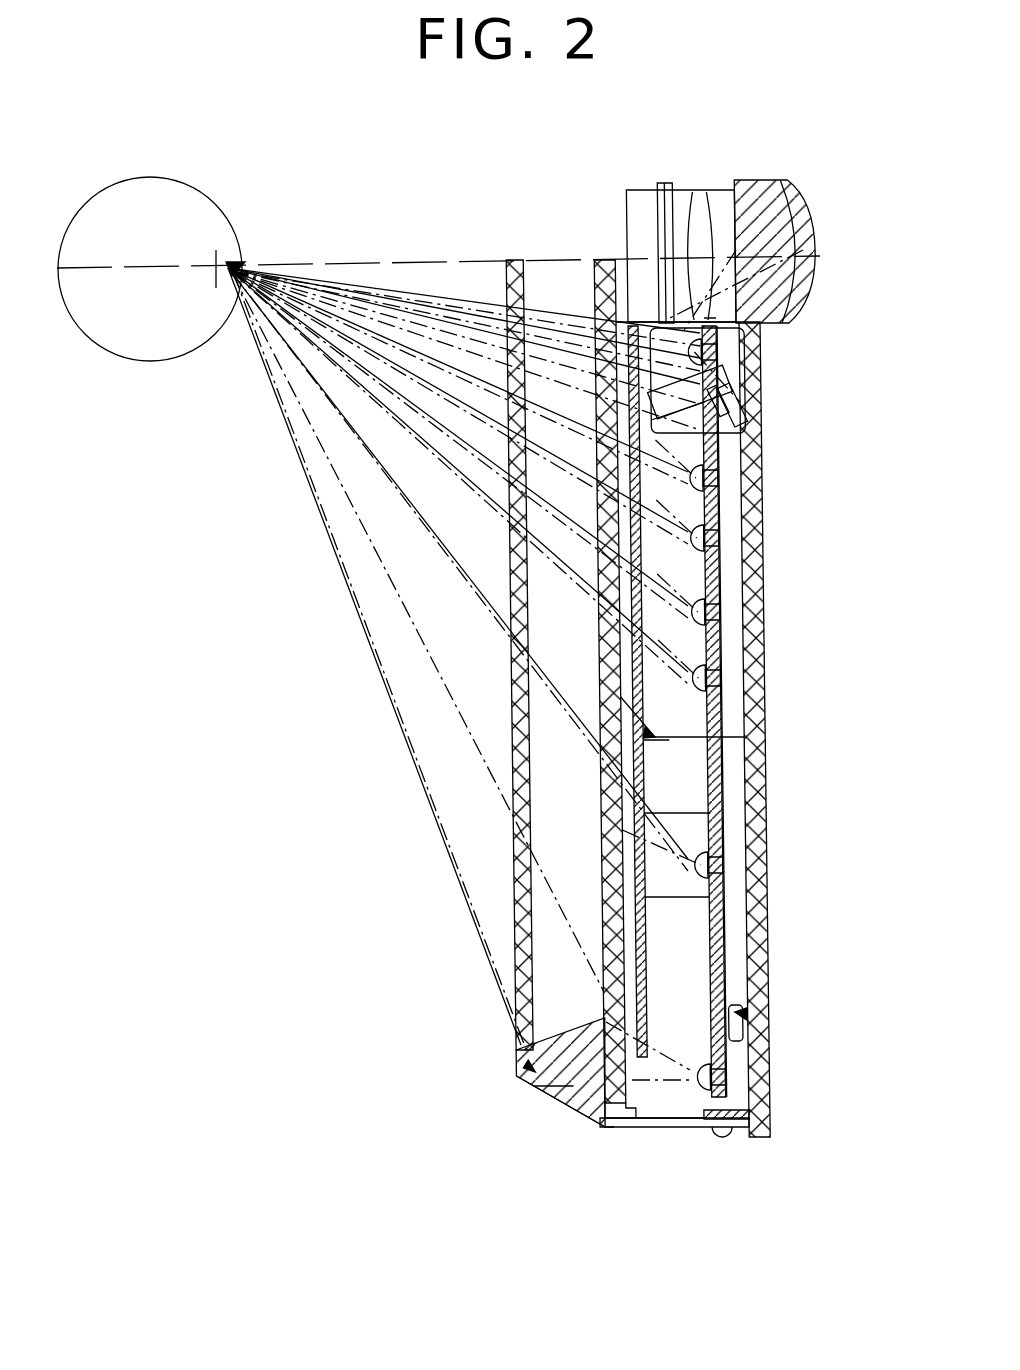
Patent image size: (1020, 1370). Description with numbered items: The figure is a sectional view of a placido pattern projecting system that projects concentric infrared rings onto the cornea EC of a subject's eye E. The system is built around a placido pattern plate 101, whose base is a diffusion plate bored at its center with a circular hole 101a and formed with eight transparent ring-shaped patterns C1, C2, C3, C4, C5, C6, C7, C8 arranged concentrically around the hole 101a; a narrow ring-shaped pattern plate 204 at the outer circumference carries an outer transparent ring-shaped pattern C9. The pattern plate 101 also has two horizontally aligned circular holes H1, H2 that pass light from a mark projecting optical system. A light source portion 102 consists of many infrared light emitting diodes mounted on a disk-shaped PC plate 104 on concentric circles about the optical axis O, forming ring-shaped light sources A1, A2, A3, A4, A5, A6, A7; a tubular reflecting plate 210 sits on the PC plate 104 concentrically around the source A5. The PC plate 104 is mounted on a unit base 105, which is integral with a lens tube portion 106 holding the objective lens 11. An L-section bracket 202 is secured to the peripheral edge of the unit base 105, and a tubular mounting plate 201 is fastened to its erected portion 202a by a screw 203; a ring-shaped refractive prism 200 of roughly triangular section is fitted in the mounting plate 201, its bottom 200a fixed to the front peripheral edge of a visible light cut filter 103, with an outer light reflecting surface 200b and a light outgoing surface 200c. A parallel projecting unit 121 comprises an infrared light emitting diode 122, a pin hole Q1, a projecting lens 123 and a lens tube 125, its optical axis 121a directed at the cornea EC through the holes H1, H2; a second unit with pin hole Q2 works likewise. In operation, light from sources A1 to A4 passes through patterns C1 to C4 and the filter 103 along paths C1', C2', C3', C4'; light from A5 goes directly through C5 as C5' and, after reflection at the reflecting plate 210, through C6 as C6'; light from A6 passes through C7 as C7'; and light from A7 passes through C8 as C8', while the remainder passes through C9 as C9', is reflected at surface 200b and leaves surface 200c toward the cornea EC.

The subject's eye E is at (104, 188).
The cornea EC is at (240, 236).
The optical axis O is at (606, 262).
The transparent ring-shaped pattern C1 is at (670, 271).
The transparent ring-shaped pattern C2 is at (762, 395).
The transparent ring-shaped pattern C3 is at (744, 479).
The transparent ring-shaped pattern C4 is at (739, 545).
The transparent ring-shaped pattern C5 is at (740, 617).
The transparent ring-shaped pattern C6 is at (749, 688).
The transparent ring-shaped pattern C7 is at (731, 825).
The transparent ring-shaped pattern C8 is at (796, 1010).
The outer transparent ring-shaped pattern C9 is at (460, 724).
The light path C1' is at (464, 258).
The light path C2' is at (464, 277).
The light path C3' is at (465, 287).
The light path C4' is at (465, 300).
The light path C5' is at (425, 390).
The light path C6' is at (425, 406).
The light path C7' is at (425, 443).
The light path C8' is at (425, 476).
The light path C9' is at (425, 569).
The optical axis of parallel projecting unit 121a is at (464, 313).
The circular hole 101a is at (592, 312).
The circular hole H1 is at (668, 320).
The circular hole H2 is at (665, 253).
The lens tube portion 106 is at (703, 300).
The objective lens 11 is at (756, 200).
The pin hole Q1 is at (701, 301).
The pin hole Q2 is at (704, 338).
The ring-shaped light source A1 is at (760, 360).
The ring-shaped light source A2 is at (760, 480).
The ring-shaped light source A3 is at (760, 540).
The ring-shaped light source A4 is at (760, 615).
The ring-shaped light source A5 is at (760, 685).
The ring-shaped light source A6 is at (760, 865).
The ring-shaped light source A7 is at (766, 1082).
The infrared light emitting diode 122 is at (752, 380).
The parallel projecting unit 121 is at (762, 405).
The projecting lens 123 is at (640, 387).
The lens tube 125 is at (636, 410).
The light source portion 102 is at (760, 768).
The tubular reflecting plate 210 is at (676, 740).
The visible light cut filter 103 is at (620, 852).
The placido pattern plate 101 is at (722, 908).
The PC plate 104 is at (748, 938).
The unit base 105 is at (766, 968).
The light outgoing surface 200c is at (524, 1050).
The refractive prism 200 is at (516, 1066).
The bottom 200a is at (562, 1086).
The outer light reflecting surface 200b is at (540, 1076).
The ring-shaped pattern plate 204 is at (592, 1128).
The bracket 202 is at (766, 1120).
The erected portion 202a is at (692, 1128).
The screw 203 is at (720, 1138).
The mounting plate 201 is at (706, 1130).